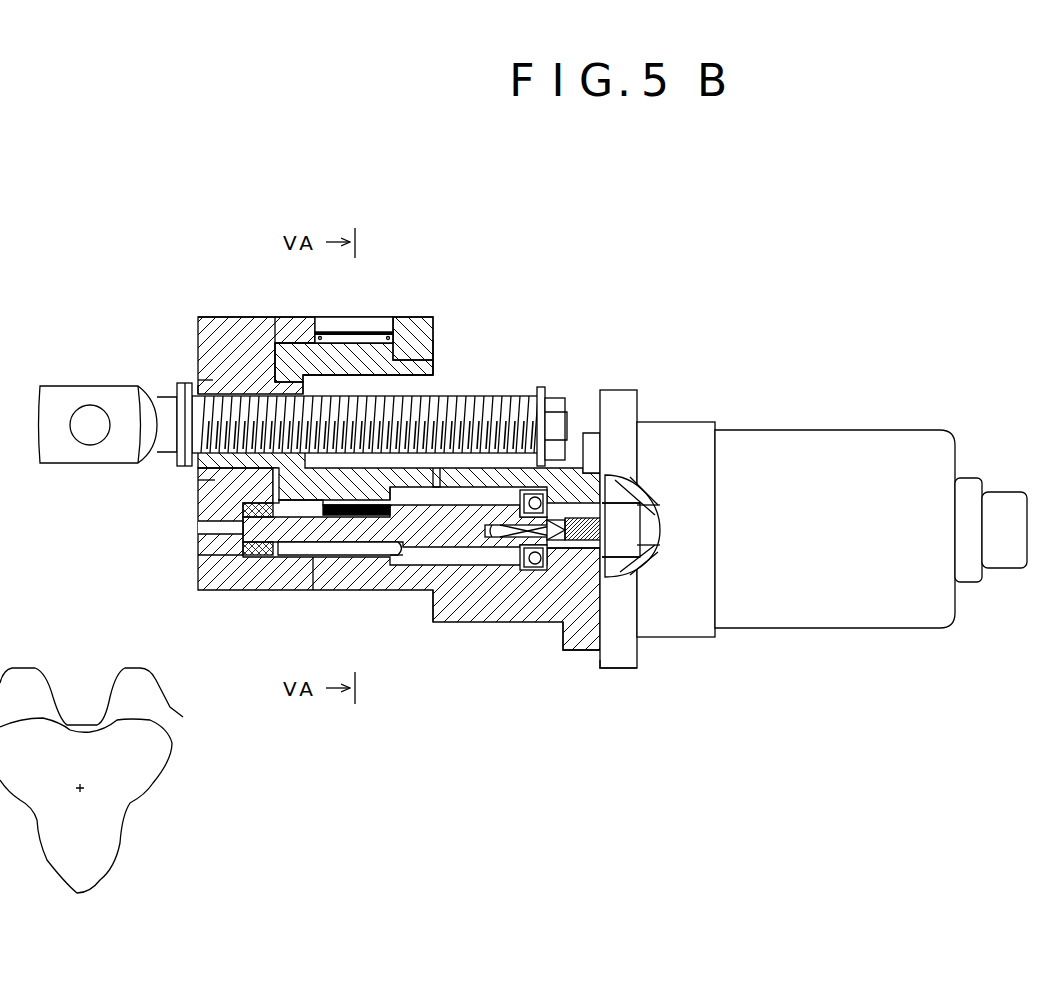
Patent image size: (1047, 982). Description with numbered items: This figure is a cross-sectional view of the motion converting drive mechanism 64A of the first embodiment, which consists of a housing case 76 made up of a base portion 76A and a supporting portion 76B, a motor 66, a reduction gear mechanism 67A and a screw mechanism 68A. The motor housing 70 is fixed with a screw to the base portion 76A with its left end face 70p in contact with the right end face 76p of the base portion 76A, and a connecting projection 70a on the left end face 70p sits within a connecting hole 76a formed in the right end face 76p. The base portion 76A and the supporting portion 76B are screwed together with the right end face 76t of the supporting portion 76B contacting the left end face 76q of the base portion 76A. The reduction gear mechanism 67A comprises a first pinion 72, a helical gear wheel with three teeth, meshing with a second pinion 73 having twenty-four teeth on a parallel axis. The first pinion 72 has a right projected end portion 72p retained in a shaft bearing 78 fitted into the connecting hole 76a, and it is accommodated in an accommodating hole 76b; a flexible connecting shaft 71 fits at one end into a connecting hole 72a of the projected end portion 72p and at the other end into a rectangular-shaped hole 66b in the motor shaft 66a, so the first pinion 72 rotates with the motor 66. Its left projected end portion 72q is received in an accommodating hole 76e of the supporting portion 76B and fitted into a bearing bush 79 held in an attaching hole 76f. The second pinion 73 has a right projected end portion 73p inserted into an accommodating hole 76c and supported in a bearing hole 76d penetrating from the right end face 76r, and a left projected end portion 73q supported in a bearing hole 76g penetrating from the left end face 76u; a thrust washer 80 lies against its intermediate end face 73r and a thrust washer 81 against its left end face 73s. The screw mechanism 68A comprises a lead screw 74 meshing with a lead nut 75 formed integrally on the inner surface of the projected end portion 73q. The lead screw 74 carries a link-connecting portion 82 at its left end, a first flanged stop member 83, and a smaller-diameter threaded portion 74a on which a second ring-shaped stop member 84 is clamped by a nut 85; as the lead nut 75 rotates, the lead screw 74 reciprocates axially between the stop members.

The motion converting drive mechanism 64A is at (527, 296).
The motor 66 is at (828, 392).
The motor shaft 66a is at (645, 537).
The rectangular-shaped hole 66b is at (658, 535).
The reduction gear mechanism 67A is at (368, 605).
The screw mechanism 68A is at (366, 382).
The motor housing 70 is at (813, 520).
The connecting projection 70a is at (640, 555).
The left end face 70p is at (603, 668).
The flexible connecting shaft 71 is at (600, 492).
The first pinion 72 is at (345, 532).
The connecting hole 72a is at (500, 545).
The projected end portion 72p is at (510, 552).
The projected end portion 72q is at (203, 531).
The second pinion 73 is at (372, 345).
The projected end portion 73p is at (432, 370).
The projected end portion 73q is at (270, 360).
The intermediate end face 73r is at (396, 326).
The left end face 73s is at (296, 352).
The lead screw 74 is at (480, 408).
The threaded portion 74a is at (569, 414).
The lead nut 75 is at (197, 380).
The housing case 76 is at (260, 647).
The base portion 76A is at (440, 592).
The supporting portion 76B is at (208, 492).
The connecting hole 76a is at (555, 572).
The accommodating hole 76b is at (360, 548).
The accommodating hole 76c is at (316, 332).
The bearing hole 76d is at (431, 320).
The accommodating hole 76e is at (262, 553).
The attaching hole 76f is at (252, 552).
The bearing hole 76g is at (213, 383).
The right end face 76p is at (585, 640).
The left end face 76q is at (313, 590).
The right end face 76r is at (433, 350).
The right end face 76t is at (330, 560).
The left end face 76u is at (232, 556).
The shaft bearing 78 is at (532, 572).
The bearing bush 79 is at (270, 498).
The thrust washer 80 is at (398, 336).
The thrust washer 81 is at (335, 338).
The link-connecting portion 82 is at (68, 393).
The first flanged stop member 83 is at (183, 388).
The second ring-shaped stop member 84 is at (541, 392).
The nut 85 is at (557, 400).